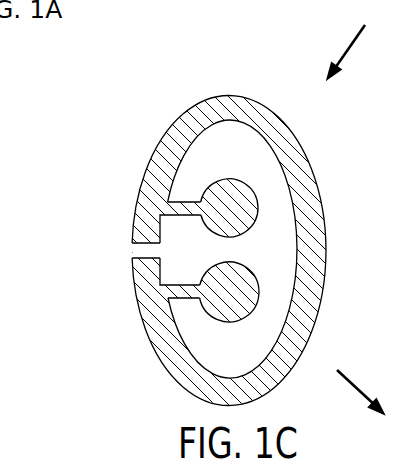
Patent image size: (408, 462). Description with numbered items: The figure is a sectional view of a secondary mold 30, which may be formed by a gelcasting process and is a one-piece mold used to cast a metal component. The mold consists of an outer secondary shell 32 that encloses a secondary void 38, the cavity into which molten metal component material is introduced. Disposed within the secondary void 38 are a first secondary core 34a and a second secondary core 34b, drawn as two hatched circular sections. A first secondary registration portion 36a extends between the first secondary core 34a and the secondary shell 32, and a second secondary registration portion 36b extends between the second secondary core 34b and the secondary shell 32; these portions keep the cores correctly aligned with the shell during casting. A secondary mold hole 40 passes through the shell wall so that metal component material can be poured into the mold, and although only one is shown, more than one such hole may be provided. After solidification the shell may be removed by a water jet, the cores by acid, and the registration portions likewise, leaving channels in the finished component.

The secondary mold 30 is at (204, 231).
The secondary shell 32 is at (135, 160).
The first secondary core 34a is at (260, 195).
The second secondary core 34b is at (260, 307).
The first secondary registration portion 36a is at (182, 192).
The second secondary registration portion 36b is at (183, 310).
The secondary void 38 is at (278, 258).
The secondary mold hole 40 is at (127, 253).